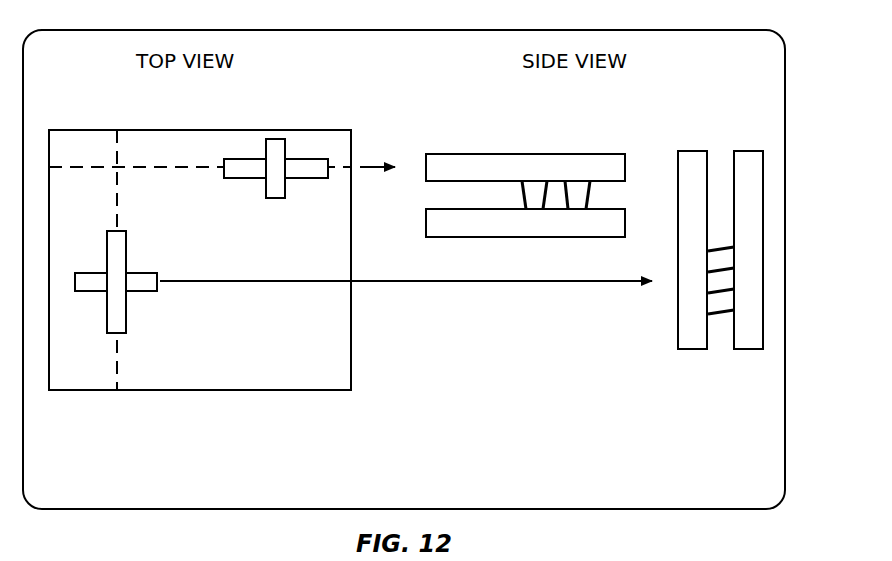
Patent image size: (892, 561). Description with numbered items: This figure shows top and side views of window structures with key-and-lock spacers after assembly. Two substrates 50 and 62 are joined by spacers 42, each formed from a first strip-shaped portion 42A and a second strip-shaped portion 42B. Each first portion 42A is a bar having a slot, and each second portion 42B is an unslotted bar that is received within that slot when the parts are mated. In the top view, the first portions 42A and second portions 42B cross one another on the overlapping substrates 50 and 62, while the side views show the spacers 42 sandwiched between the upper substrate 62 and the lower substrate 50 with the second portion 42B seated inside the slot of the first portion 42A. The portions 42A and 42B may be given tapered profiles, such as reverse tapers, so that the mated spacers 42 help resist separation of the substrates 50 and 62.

The key-and-lock spacer 42 is at (516, 193).
The first strip-shaped portion 42A is at (305, 159).
The second strip-shaped portion 42B is at (273, 199).
The substrate 50 is at (503, 226).
The substrate 62 is at (456, 160).